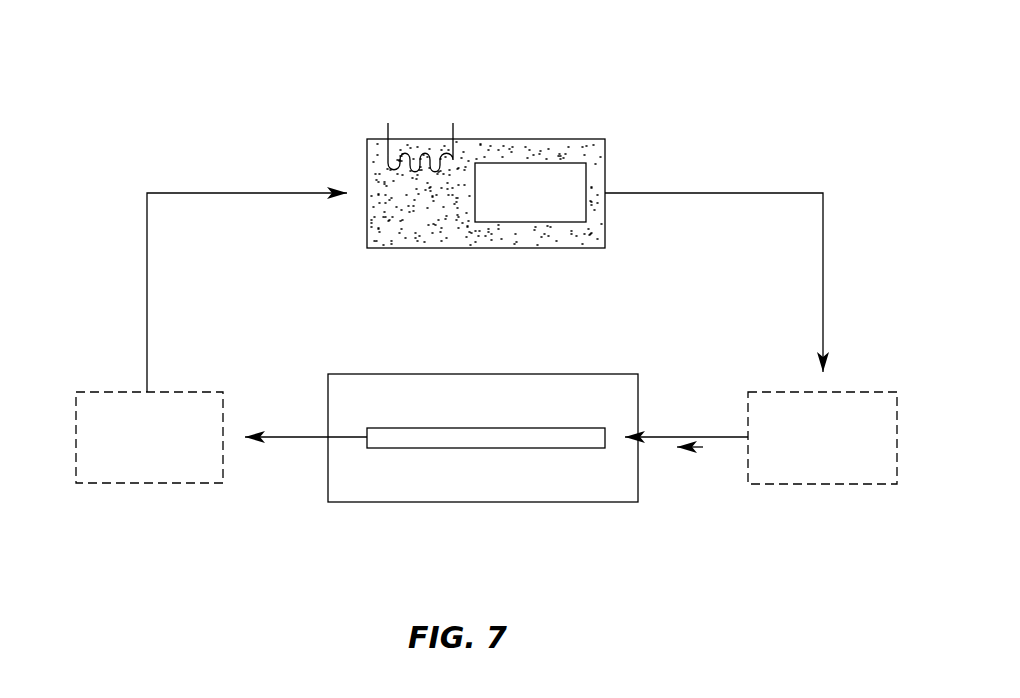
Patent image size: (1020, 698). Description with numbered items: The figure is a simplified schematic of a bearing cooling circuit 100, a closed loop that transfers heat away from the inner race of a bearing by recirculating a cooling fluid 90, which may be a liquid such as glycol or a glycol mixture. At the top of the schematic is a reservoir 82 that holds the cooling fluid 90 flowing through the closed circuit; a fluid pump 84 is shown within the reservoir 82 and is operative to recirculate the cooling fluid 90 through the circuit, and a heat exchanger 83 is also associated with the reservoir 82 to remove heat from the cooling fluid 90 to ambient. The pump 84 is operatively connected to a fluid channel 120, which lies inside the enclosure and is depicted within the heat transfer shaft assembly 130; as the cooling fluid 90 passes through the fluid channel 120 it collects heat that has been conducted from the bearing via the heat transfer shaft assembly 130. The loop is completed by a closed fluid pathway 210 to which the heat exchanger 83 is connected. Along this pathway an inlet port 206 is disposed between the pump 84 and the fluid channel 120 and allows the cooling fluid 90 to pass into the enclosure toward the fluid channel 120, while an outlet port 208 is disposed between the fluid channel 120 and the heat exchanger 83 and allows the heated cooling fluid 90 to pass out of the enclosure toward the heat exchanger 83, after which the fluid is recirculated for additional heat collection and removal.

The bearing cooling circuit 100 is at (270, 74).
The reservoir 82 is at (510, 139).
The heat exchanger 83 is at (369, 134).
The fluid pump 84 is at (603, 169).
The cooling fluid 90 is at (423, 222).
The closed fluid pathway 210 is at (745, 193).
The outlet port 208 is at (848, 392).
The inlet port 206 is at (93, 392).
The heat transfer shaft assembly 130 is at (540, 374).
The fluid channel 120 is at (420, 448).